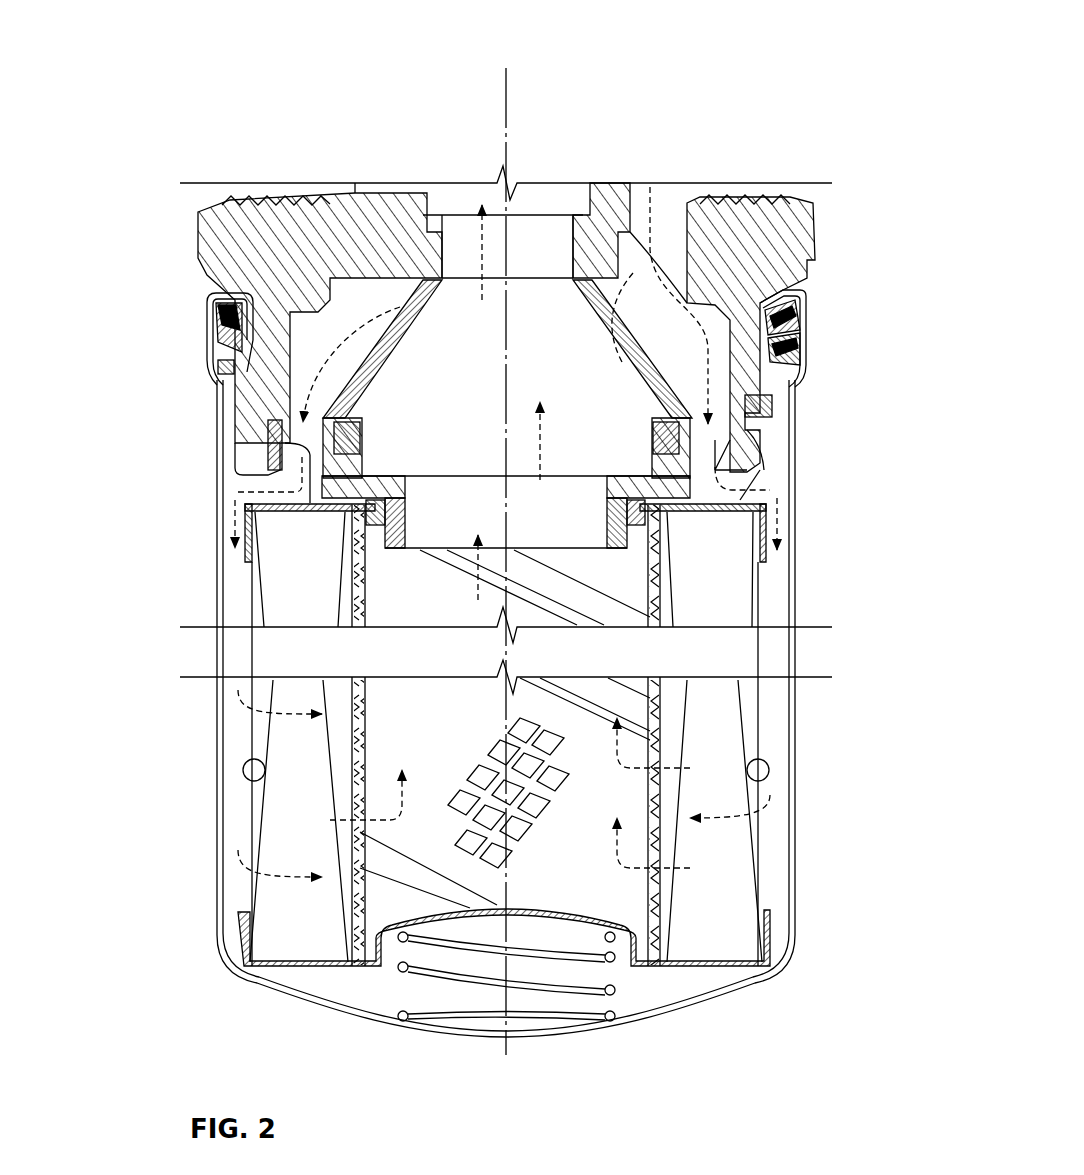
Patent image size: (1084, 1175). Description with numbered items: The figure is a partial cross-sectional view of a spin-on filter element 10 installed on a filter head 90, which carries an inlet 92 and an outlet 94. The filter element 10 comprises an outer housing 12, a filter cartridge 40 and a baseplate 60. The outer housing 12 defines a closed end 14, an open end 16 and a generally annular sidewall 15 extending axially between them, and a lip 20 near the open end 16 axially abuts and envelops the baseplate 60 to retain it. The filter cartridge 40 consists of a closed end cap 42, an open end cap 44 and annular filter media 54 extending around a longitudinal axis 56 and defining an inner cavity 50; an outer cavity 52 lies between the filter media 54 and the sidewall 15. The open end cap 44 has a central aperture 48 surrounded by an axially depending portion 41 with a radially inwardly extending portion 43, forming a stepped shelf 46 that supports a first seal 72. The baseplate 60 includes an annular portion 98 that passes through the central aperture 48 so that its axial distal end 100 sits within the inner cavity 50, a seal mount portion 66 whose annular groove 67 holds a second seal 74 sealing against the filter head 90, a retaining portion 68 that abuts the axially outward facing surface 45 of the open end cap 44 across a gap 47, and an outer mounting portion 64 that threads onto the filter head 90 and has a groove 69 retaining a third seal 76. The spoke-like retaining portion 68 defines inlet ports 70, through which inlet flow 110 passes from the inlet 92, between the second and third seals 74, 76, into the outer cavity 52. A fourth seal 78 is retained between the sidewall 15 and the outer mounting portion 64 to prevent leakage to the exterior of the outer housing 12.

The filter element 10 is at (200, 423).
The outer housing 12 is at (215, 745).
The closed end 14 is at (300, 1006).
The sidewall 15 is at (218, 812).
The open end 16 is at (212, 312).
The lip 20 is at (805, 286).
The filter cartridge 40 is at (250, 505).
The axially depending portion 41 is at (366, 512).
The closed end cap 42 is at (740, 970).
The radially inwardly extending portion 43 is at (355, 562).
The open end cap 44 is at (270, 542).
The axially outward facing surface 45 is at (285, 444).
The shelf 46 is at (645, 548).
The gap 47 is at (772, 500).
The central aperture 48 is at (455, 530).
The inner cavity 50 is at (402, 755).
The outer cavity 52 is at (778, 832).
The filter media 54 is at (730, 720).
The longitudinal axis 56 is at (506, 72).
The baseplate 60 is at (790, 345).
The outer mounting portion 64 is at (790, 322).
The seal mount portion 66 is at (360, 422).
The annular groove 67 is at (355, 478).
The retaining portion 68 is at (752, 478).
The groove 69 is at (765, 432).
The inlet ports 70 is at (770, 462).
The first seal 72 is at (625, 490).
The second seal 74 is at (662, 420).
The third seal 76 is at (792, 387).
The fourth seal 78 is at (218, 378).
The filter head 90 is at (205, 228).
The inlet 92 is at (665, 205).
The outlet 94 is at (548, 205).
The annular portion 98 is at (620, 545).
The axial distal end 100 is at (624, 548).
The inlet flow 110 is at (245, 495).